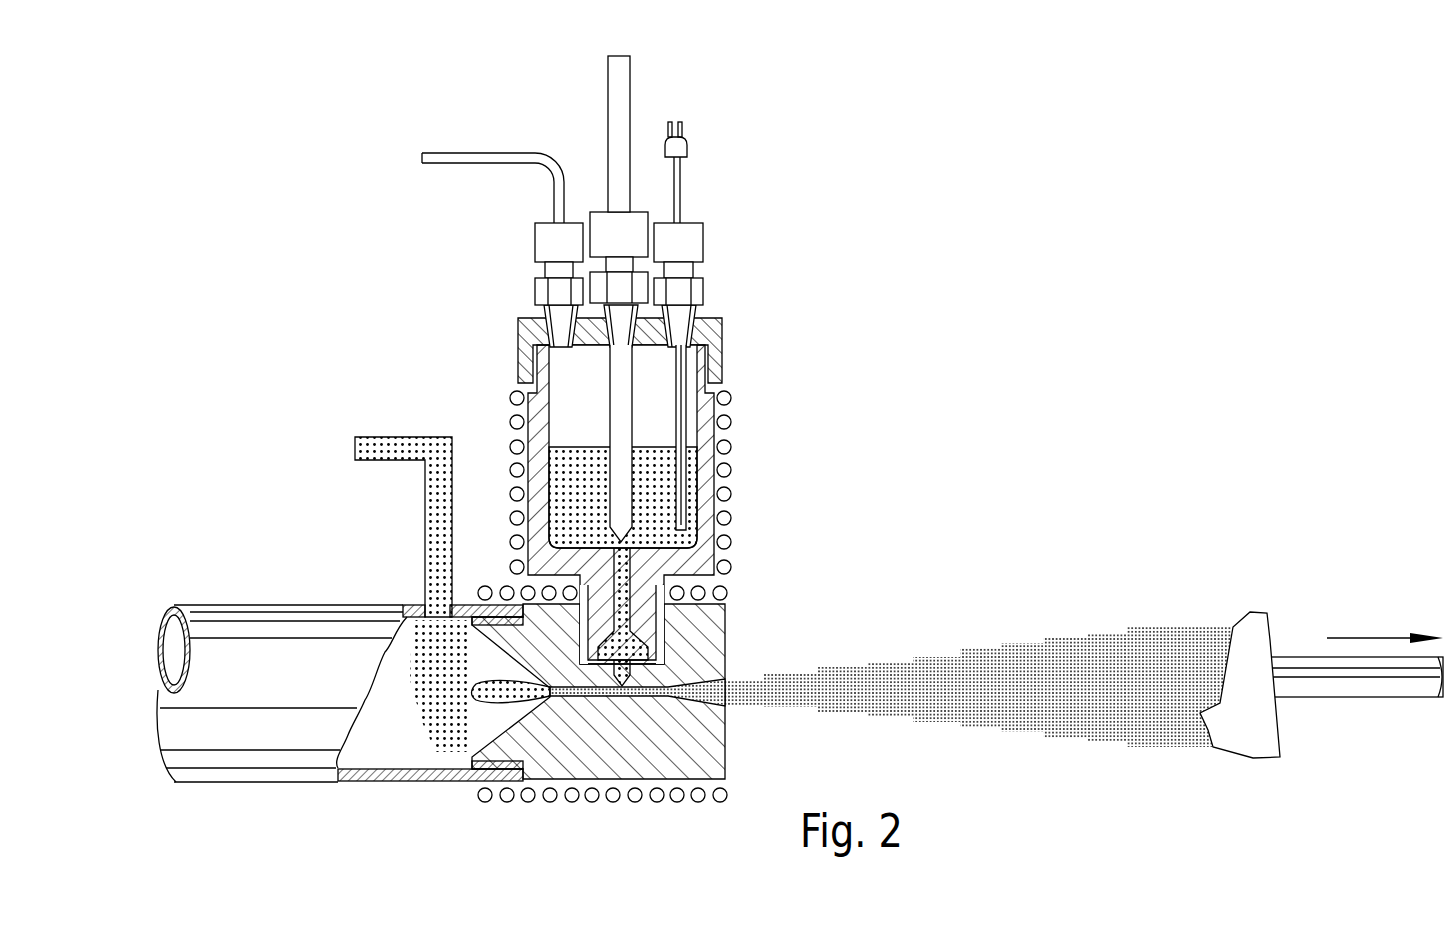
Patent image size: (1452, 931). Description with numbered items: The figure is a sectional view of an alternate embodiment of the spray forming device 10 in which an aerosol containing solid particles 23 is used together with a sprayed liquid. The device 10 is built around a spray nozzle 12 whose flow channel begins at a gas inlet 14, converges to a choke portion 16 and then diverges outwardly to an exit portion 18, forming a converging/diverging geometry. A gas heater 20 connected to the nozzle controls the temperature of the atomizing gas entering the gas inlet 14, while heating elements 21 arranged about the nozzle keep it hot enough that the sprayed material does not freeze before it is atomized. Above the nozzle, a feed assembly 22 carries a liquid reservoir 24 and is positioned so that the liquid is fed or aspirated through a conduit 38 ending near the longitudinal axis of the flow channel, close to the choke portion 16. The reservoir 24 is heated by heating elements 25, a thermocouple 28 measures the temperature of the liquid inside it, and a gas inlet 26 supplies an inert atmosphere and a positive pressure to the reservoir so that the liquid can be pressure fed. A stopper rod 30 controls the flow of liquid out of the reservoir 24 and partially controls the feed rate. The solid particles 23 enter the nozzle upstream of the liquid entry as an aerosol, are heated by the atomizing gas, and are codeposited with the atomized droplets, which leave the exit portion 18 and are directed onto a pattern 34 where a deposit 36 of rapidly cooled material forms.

The spray forming device 10 is at (309, 290).
The spray nozzle 12 is at (727, 740).
The gas inlet 14 is at (462, 712).
The choke portion 16 is at (590, 688).
The exit portion 18 is at (746, 680).
The gas heater 20 is at (277, 605).
The heating elements 21 is at (680, 803).
The feed assembly 22 is at (748, 300).
The solid particles 23 is at (397, 437).
The liquid reservoir 24 is at (715, 432).
The heating elements 25 is at (510, 470).
The gas inlet 26 is at (422, 153).
The thermocouple 28 is at (686, 502).
The stopper rod 30 is at (630, 74).
The pattern 34 is at (1253, 758).
The deposit 36 is at (1250, 613).
The conduit 38 is at (625, 688).